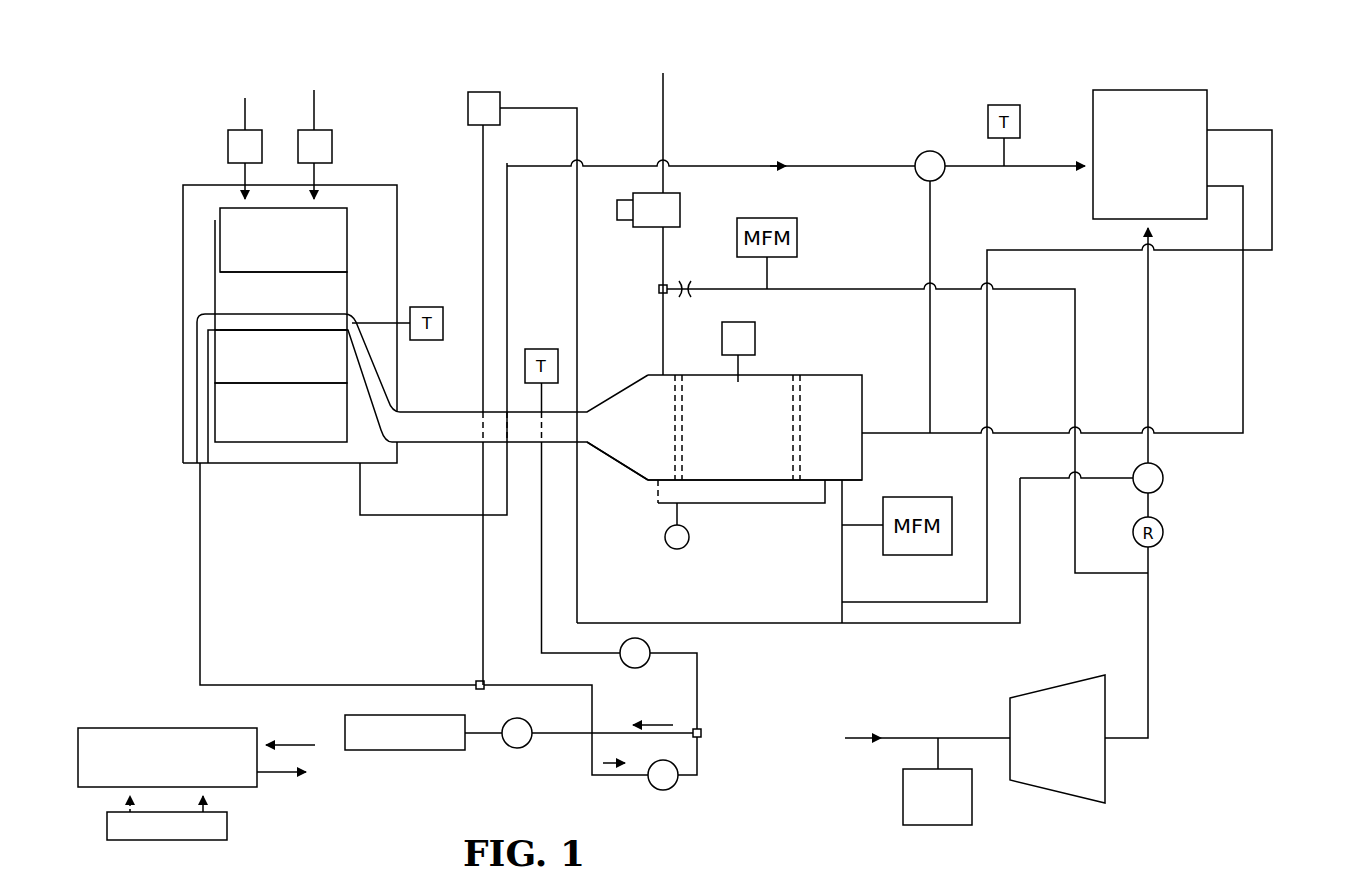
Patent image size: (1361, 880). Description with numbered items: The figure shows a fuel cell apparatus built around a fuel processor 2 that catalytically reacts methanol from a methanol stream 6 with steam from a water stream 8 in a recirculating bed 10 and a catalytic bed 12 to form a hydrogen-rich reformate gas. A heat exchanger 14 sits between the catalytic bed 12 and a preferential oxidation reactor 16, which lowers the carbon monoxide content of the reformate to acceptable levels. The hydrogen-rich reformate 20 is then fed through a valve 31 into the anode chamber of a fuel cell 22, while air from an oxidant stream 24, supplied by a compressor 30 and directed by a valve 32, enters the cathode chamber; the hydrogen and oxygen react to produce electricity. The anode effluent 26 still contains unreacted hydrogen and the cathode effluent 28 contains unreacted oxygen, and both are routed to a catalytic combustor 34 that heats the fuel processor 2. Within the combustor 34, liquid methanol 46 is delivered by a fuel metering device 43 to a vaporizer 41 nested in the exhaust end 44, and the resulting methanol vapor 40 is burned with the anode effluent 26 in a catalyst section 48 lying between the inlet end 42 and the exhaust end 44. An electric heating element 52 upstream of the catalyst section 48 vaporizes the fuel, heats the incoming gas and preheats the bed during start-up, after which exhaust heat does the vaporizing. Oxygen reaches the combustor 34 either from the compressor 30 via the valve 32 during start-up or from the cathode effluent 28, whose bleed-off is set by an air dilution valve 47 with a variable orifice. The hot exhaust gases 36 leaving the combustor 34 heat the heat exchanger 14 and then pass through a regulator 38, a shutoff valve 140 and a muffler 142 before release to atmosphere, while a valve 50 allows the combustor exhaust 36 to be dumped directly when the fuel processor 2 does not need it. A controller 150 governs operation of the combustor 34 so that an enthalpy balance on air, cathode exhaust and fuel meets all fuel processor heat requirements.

The fuel processor 2 is at (162, 272).
The methanol stream 6 is at (242, 110).
The water stream 8 is at (317, 112).
The recirculating bed 10 is at (340, 250).
The catalytic bed 12 is at (340, 290).
The heat exchanger 14 is at (237, 354).
The preferential oxidation (PrOX) reactor 16 is at (237, 411).
The hydrogen-rich reformate 20 is at (392, 517).
The fuel cell 22 is at (1134, 195).
The oxidant stream 24 is at (1148, 317).
The anode effluent 26 is at (1243, 222).
The cathode effluent 28 is at (1272, 158).
The compressor 30 is at (1040, 698).
The valve 31 is at (923, 153).
The valve 32 is at (1163, 478).
The combustor 34 is at (773, 366).
The exhaust gases 36 is at (425, 433).
The regulator 38 is at (668, 787).
The MeOH vapor 40 is at (720, 503).
The vaporizer 41 is at (675, 470).
The inlet end 42 is at (853, 390).
The fuel metering device 43 is at (673, 202).
The exhaust end 44 is at (623, 448).
The liquid MeOH 46 is at (662, 340).
The air dilution valve 47 is at (497, 93).
The catalyst section 48 is at (742, 470).
The valve 50 is at (645, 663).
The electric heating element 52 is at (798, 463).
The shutoff valve 140 is at (527, 743).
The muffler 142 is at (400, 745).
The controller 150 is at (157, 719).